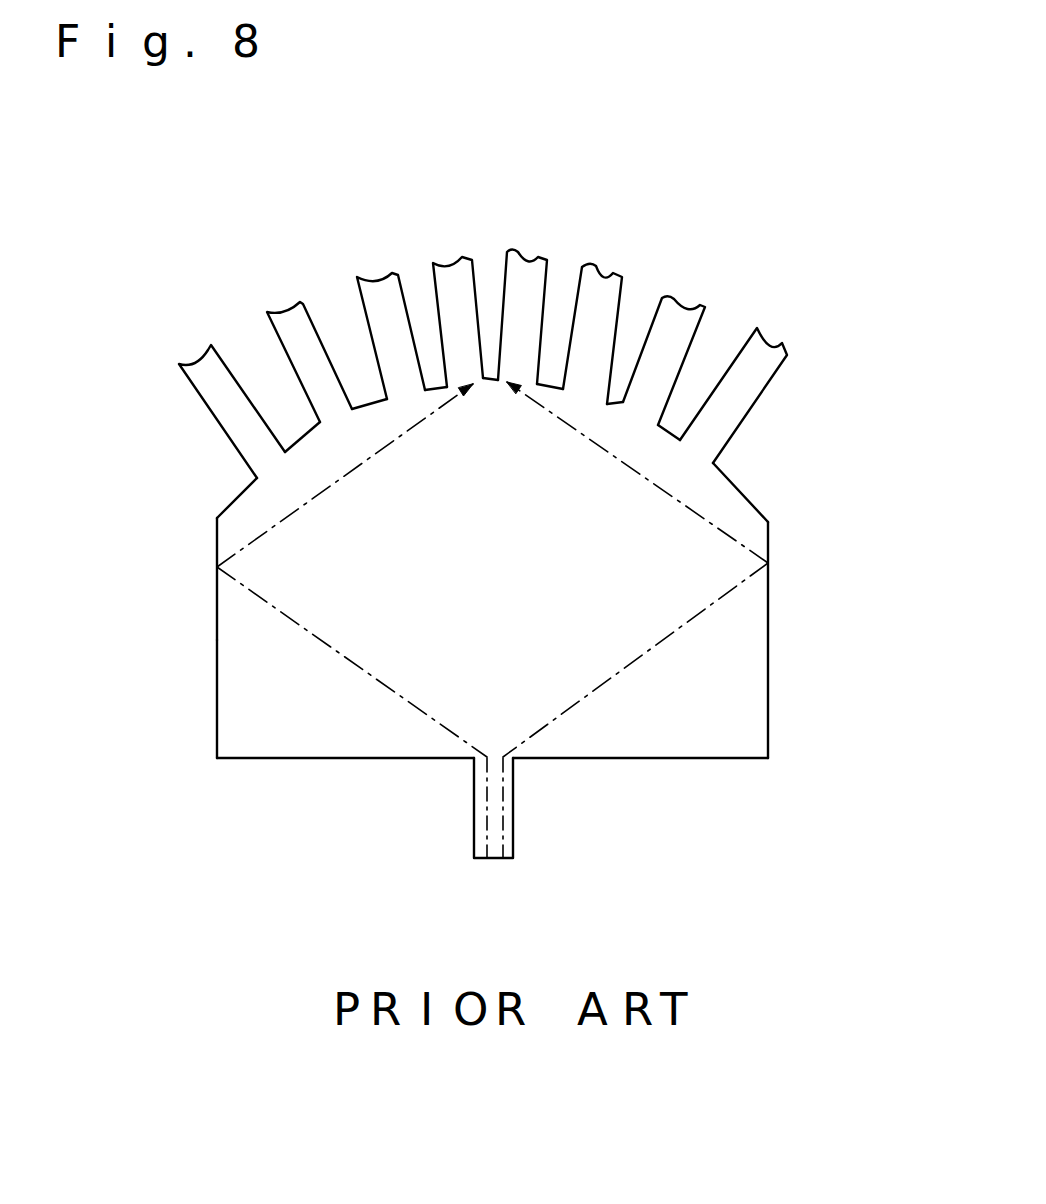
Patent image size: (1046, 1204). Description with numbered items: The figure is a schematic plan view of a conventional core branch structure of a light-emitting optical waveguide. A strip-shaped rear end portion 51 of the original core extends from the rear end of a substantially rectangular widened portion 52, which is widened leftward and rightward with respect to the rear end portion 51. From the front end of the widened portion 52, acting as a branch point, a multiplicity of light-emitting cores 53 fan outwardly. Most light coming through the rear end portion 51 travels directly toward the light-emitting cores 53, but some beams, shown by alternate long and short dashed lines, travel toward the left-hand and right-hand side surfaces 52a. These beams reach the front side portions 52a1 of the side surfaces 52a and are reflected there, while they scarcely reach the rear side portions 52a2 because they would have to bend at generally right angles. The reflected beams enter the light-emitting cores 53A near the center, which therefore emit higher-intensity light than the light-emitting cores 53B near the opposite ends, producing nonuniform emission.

The strip-shaped rear end portion 51 is at (515, 823).
The widened portion 52 is at (753, 695).
The side surfaces 52a is at (500, 638).
The front side portions 52a1 is at (207, 527).
The rear side portions 52a2 is at (153, 699).
The light-emitting cores 53 is at (497, 289).
The light-emitting cores near the center 53A is at (528, 275).
The light-emitting cores near opposite ends 53B is at (203, 370).